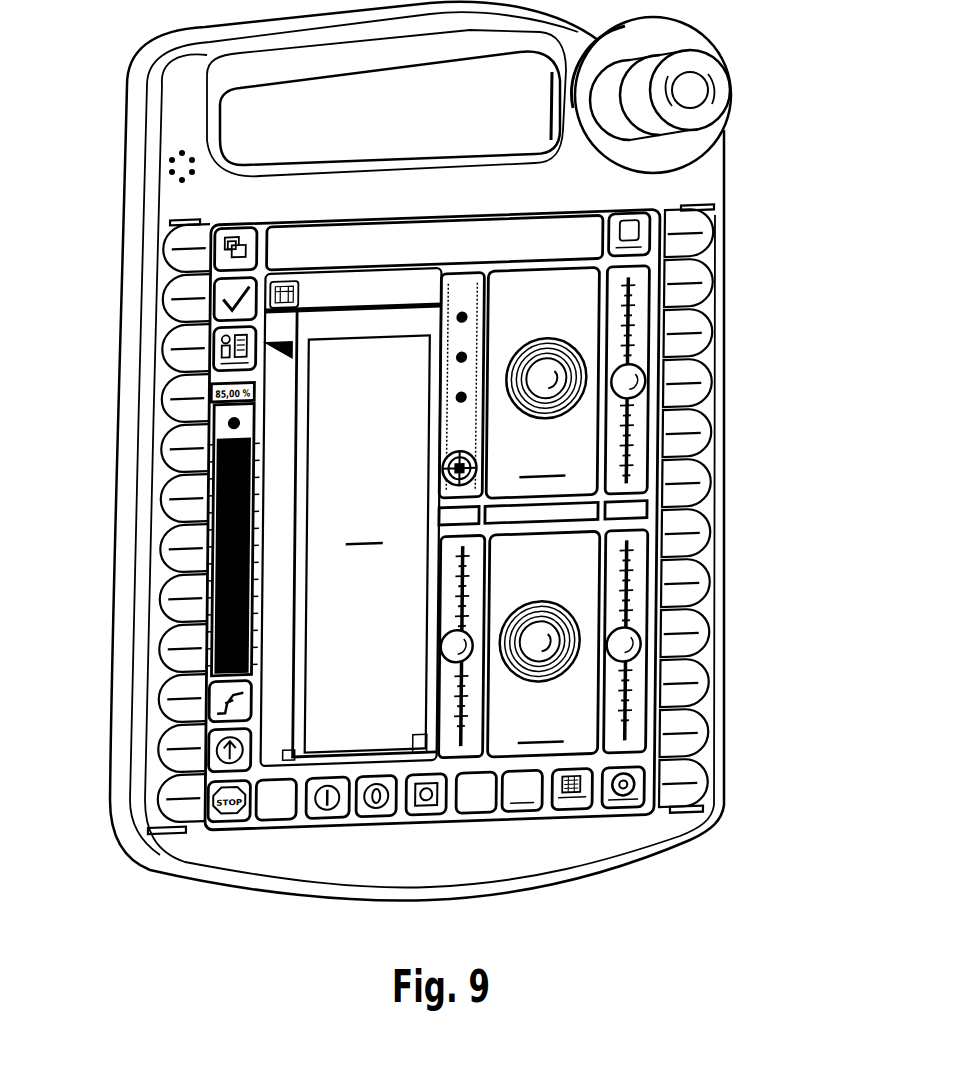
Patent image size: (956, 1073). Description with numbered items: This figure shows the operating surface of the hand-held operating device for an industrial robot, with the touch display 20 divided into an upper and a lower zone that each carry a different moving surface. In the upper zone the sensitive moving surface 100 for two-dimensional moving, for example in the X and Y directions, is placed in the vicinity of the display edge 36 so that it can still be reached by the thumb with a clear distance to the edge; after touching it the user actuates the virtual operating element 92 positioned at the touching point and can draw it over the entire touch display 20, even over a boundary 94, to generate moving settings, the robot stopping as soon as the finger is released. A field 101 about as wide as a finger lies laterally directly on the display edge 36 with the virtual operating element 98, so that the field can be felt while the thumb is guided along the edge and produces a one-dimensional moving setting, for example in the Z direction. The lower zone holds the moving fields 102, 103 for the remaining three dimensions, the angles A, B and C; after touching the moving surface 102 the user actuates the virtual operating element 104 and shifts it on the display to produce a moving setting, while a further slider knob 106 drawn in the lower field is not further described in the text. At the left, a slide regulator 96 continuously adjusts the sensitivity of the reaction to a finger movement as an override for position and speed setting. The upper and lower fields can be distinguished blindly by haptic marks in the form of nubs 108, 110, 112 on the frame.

The touch display 20 is at (362, 532).
The frame section / display edge 36 is at (652, 448).
The virtual operating element 92 is at (550, 378).
The boundary 94 is at (652, 283).
The slide regulator (override) virtual operating element 96 is at (175, 548).
The virtual operating element 98 is at (645, 383).
The moving surface (sensitive surface) 100 is at (542, 382).
The field 101 is at (650, 430).
The moving surface 102 is at (544, 644).
The moving field 103 is at (632, 712).
The virtual operating element 104 is at (540, 640).
The second slider knob 106 is at (645, 645).
The nub (haptic mark) 108 is at (652, 510).
The nub (haptic mark) 110 is at (715, 806).
The nub (haptic mark) 112 is at (727, 203).